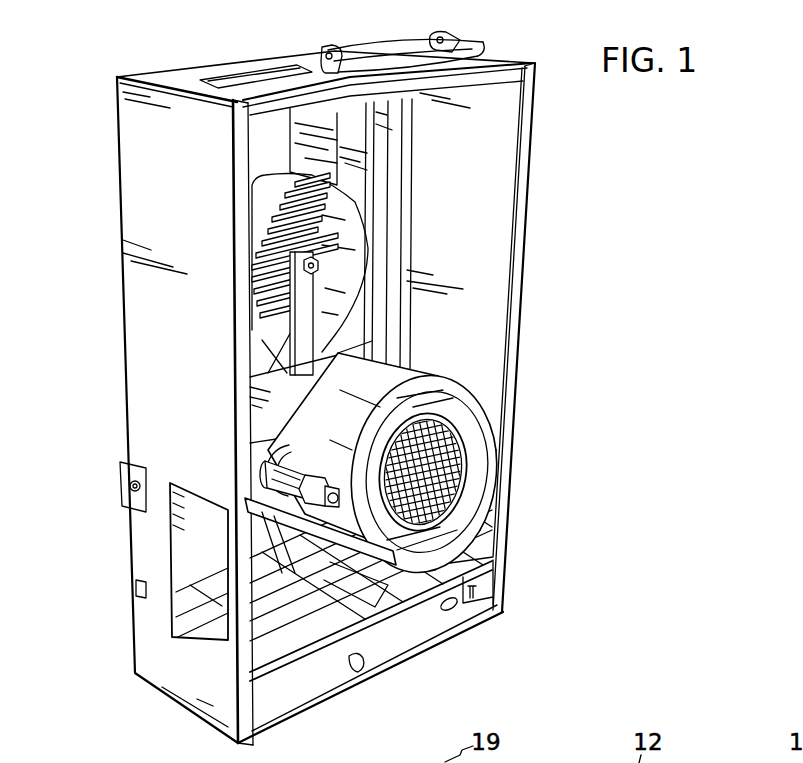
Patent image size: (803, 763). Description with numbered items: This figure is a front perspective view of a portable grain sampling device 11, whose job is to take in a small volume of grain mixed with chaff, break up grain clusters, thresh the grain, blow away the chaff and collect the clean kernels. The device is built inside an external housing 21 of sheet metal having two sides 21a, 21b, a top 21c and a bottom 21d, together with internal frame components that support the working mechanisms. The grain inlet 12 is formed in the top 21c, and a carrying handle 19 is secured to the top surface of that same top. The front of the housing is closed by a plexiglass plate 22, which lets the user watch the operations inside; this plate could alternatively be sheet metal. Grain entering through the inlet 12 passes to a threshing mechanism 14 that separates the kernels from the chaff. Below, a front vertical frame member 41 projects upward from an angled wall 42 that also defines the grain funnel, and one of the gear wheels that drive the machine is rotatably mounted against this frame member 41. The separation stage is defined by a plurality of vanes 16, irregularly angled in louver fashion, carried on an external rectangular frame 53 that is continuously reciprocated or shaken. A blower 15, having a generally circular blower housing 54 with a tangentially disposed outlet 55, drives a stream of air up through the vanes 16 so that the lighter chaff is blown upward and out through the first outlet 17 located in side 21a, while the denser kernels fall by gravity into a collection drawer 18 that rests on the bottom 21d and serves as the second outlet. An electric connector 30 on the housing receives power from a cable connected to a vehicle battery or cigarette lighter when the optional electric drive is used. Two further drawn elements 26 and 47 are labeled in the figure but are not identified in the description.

The portable grain sampling device 11 is at (542, 212).
The grain inlet 12 is at (276, 74).
The threshing mechanism 14 is at (258, 525).
The blower 15 is at (466, 503).
The vanes 16 is at (197, 613).
The first outlet 17 is at (178, 539).
The collection drawer 18 is at (265, 722).
The carrying handle 19 is at (475, 43).
The external housing 21 is at (113, 115).
The side 21a is at (150, 207).
The side 21b is at (478, 317).
The top 21c is at (180, 80).
The bottom 21d is at (462, 609).
The plexiglass plate 22 is at (496, 138).
The latch 26 is at (121, 490).
The electric connector 30 is at (500, 574).
The front vertical frame member 41 is at (265, 317).
The angled wall 42 is at (256, 412).
The filter shroud 47 is at (260, 152).
The external rectangular frame 53 is at (290, 647).
The blower housing 54 is at (470, 410).
The tangentially disposed outlet 55 is at (390, 597).